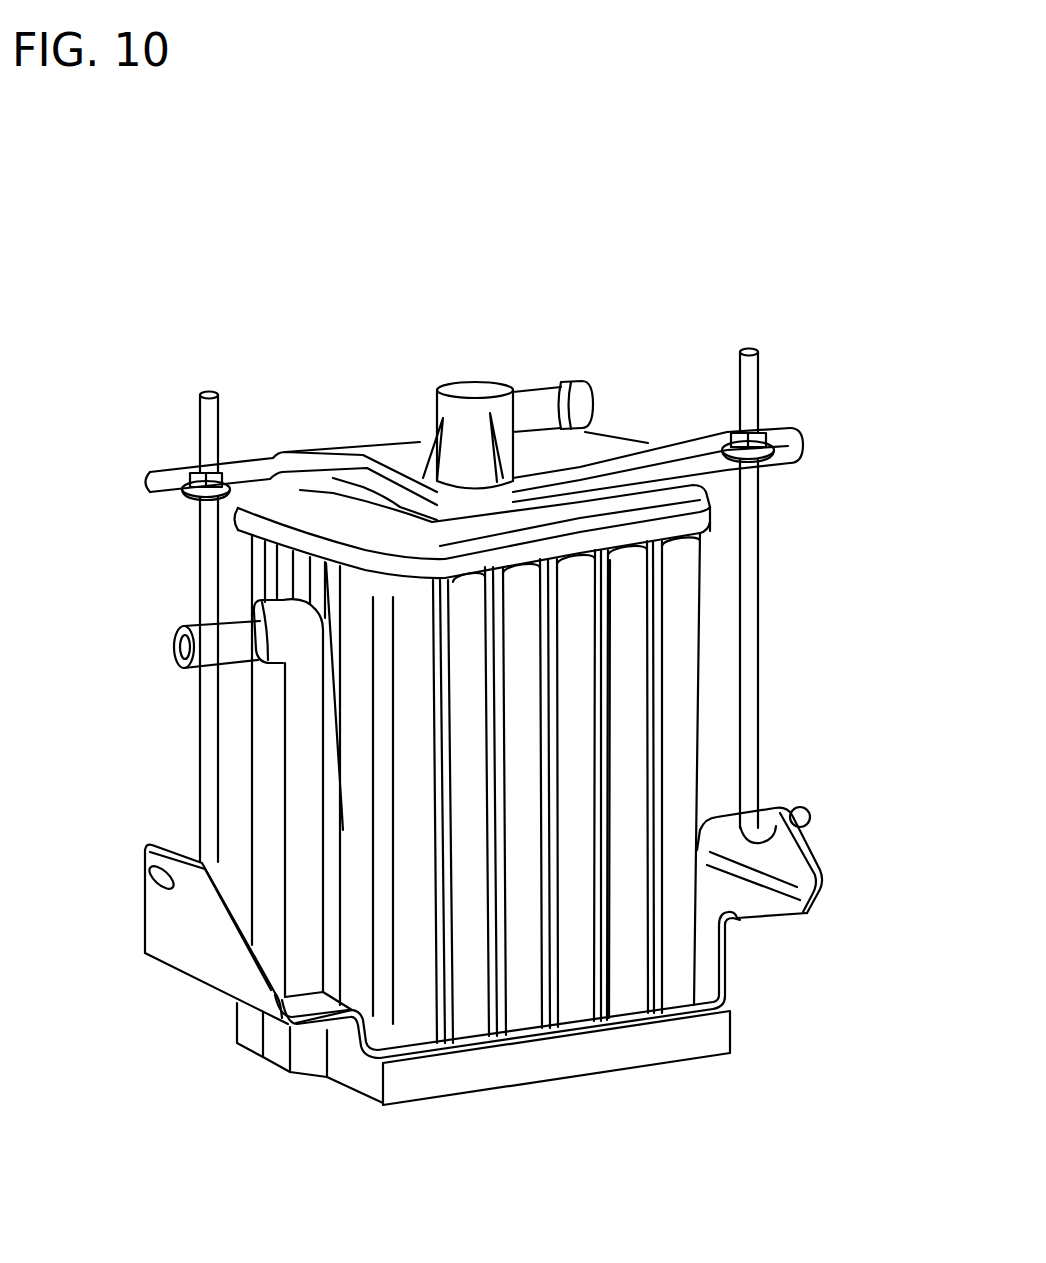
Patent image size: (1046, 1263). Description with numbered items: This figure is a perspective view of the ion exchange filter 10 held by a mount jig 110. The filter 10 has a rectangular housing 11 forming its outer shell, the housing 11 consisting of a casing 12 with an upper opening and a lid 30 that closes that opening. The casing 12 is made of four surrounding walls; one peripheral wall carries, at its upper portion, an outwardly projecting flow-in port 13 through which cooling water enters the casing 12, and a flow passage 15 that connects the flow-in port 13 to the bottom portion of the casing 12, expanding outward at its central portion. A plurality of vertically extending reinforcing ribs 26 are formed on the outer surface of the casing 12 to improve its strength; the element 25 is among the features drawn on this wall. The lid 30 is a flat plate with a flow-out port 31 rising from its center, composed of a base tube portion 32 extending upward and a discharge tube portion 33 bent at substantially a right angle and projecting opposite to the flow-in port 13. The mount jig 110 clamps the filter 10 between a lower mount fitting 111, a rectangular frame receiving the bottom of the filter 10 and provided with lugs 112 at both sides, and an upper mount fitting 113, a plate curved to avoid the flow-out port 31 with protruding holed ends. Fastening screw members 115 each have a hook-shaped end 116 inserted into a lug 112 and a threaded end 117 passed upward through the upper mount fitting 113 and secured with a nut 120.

The ion exchange filter 10 is at (437, 372).
The housing 11 is at (698, 677).
The casing 12 is at (698, 730).
The flow-in port 13 is at (201, 633).
The flow passage 15 is at (273, 738).
The rib 25 is at (623, 910).
The reinforcing ribs 26 is at (657, 970).
The lid 30 is at (598, 438).
The flow-out port 31 is at (480, 388).
The base tube portion 32 is at (430, 402).
The discharge tube portion 33 is at (533, 398).
The mount jig 110 is at (763, 361).
The mount fitting 111 is at (713, 1033).
The lugs 112 is at (802, 864).
The mount fitting 113 is at (800, 440).
The fastening screw members 115 is at (752, 550).
The end 116 is at (812, 815).
The end 117 is at (753, 417).
The nut 120 is at (731, 428).